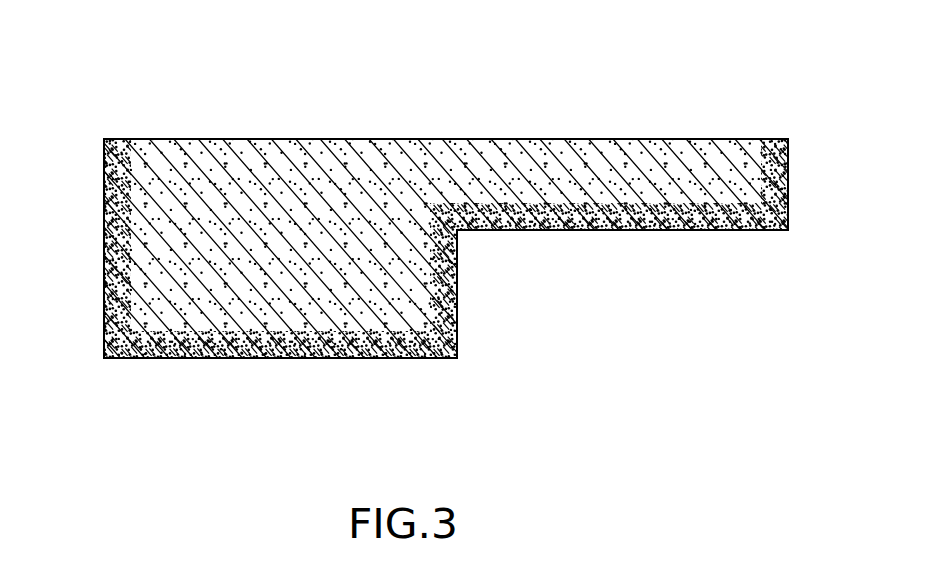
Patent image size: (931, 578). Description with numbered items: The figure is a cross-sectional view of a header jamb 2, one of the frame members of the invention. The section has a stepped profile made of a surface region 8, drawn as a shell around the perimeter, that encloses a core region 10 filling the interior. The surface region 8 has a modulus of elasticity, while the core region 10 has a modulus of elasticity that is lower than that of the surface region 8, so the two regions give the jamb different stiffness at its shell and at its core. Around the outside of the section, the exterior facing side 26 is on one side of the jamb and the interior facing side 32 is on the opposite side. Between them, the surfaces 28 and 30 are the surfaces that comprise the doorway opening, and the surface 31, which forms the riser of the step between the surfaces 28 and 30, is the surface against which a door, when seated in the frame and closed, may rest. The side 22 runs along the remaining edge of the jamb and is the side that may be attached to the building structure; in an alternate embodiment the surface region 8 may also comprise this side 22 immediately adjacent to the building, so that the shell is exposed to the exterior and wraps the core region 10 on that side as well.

The header jamb 2 is at (465, 249).
The surface region 8 is at (443, 259).
The core region 10 is at (333, 193).
The side 22 is at (543, 138).
The exterior facing side 26 is at (104, 240).
The surface 28 is at (248, 360).
The surface 30 is at (633, 232).
The surface 31 is at (457, 308).
The interior facing side 32 is at (788, 183).